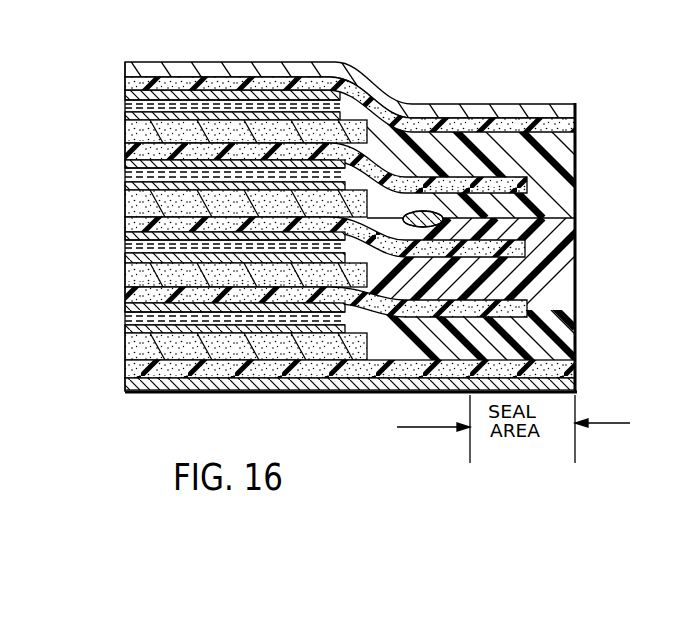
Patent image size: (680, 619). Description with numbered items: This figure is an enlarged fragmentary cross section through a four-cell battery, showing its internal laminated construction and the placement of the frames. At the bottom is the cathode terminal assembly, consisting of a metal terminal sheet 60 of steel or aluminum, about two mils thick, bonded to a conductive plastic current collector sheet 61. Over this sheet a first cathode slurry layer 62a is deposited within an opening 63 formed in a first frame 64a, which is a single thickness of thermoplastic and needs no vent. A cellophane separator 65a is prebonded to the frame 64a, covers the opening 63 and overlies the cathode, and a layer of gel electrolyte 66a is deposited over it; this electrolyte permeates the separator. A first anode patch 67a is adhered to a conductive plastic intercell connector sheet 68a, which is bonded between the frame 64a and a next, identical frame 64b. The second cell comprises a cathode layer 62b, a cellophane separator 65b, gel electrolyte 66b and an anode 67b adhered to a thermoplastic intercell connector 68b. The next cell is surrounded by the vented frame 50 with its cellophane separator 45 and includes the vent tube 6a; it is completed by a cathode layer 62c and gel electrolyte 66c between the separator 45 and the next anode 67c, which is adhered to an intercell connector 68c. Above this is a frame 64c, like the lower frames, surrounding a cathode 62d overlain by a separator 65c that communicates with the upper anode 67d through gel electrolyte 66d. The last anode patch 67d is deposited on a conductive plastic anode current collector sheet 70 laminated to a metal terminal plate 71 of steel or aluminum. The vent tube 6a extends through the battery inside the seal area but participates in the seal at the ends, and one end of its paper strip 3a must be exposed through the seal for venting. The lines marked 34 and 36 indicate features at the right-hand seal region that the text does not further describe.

The conductive plastic anode current collector sheet 70 is at (130, 70).
The upper anode patch 67d is at (128, 83).
The gel electrolyte 66d is at (128, 95).
The separator 65c is at (128, 106).
The cathode 62d is at (128, 116).
The intercell connector 68c is at (128, 131).
The anode 67c is at (128, 151).
The gel electrolyte 66c is at (128, 164).
The cellophane separator 45 is at (128, 175).
The cathode layer 62c is at (128, 186).
The thermoplastic intercell connector 68b is at (128, 203).
The anode 67b is at (128, 224).
The gel electrolyte 66b is at (128, 236).
The cellophane separator 65b is at (128, 246).
The cathode layer 62b is at (128, 258).
The conductive plastic intercell connector sheet 68a is at (128, 275).
The first anode patch 67a is at (128, 295).
The gel electrolyte 66a is at (128, 307).
The cellophane separator 65a is at (128, 318).
The first cathode slurry layer 62a is at (128, 329).
The conductive plastic current collector sheet 61 is at (128, 384).
The metal terminal sheet 60 is at (128, 393).
The opening 63 is at (360, 350).
The metal terminal plate 71 is at (577, 104).
The frame 64c is at (563, 155).
The frame 64b is at (565, 283).
The first frame 64a is at (565, 337).
The upper contact 34 is at (563, 207).
The lower contact 36 is at (566, 240).
The frame 50 is at (583, 230).
The paper strip 3a is at (426, 212).
The vent tube 6a is at (432, 213).